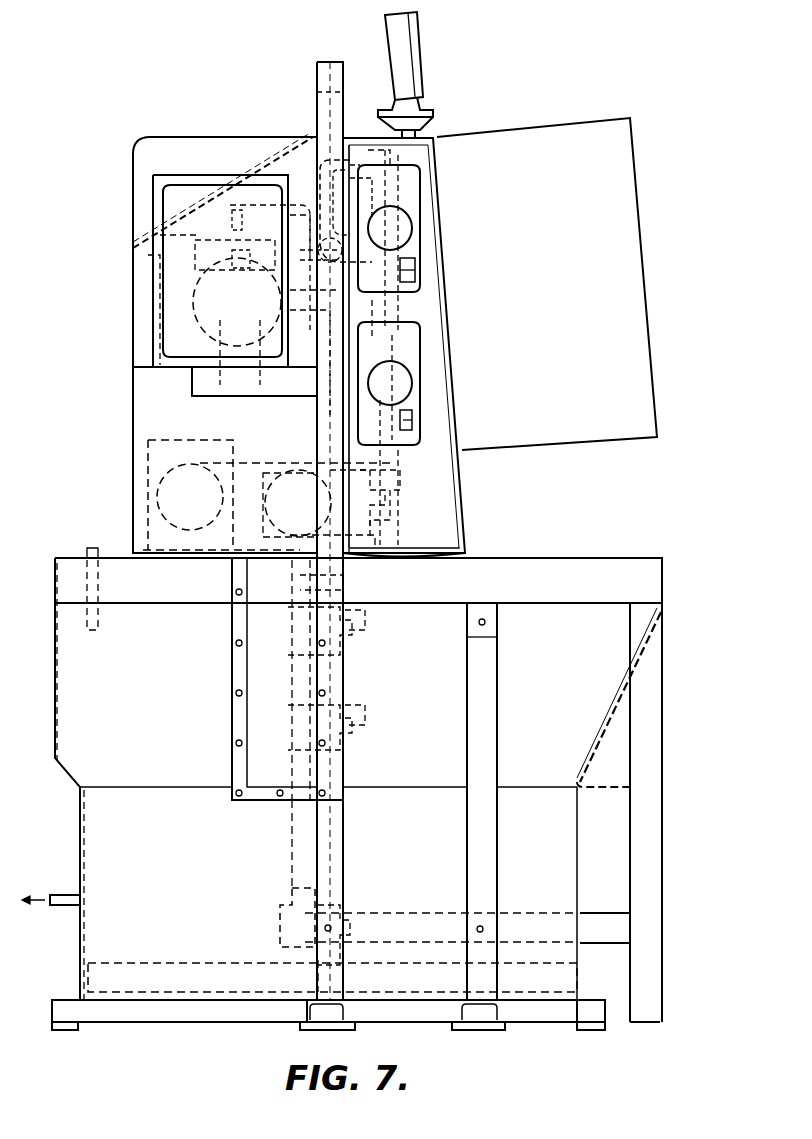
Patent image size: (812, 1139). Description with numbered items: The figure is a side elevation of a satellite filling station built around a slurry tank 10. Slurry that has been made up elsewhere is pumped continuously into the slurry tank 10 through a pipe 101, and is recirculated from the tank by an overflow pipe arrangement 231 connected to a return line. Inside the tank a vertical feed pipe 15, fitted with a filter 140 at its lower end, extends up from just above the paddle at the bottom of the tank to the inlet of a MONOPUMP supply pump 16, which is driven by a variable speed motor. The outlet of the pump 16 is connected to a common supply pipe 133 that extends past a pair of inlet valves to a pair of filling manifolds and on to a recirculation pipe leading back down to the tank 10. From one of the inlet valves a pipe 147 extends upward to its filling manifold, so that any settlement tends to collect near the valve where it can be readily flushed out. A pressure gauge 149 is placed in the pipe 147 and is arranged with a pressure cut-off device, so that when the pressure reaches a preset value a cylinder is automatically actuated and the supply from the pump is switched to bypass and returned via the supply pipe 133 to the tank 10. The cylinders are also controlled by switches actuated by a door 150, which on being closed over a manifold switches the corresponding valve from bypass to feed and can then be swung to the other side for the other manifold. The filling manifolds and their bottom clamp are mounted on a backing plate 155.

The slurry tank 10 is at (78, 866).
The vertical feed pipe 15 is at (290, 835).
The supply pump 16 is at (222, 282).
The pipe 101 is at (96, 589).
The common supply pipe 133 is at (330, 310).
The filter 140 is at (288, 920).
The pipe 147 is at (368, 134).
The pressure gauge 149 is at (420, 62).
The door 150 is at (556, 126).
The backing plate 155 is at (420, 520).
The overflow pipe arrangement 231 is at (62, 906).